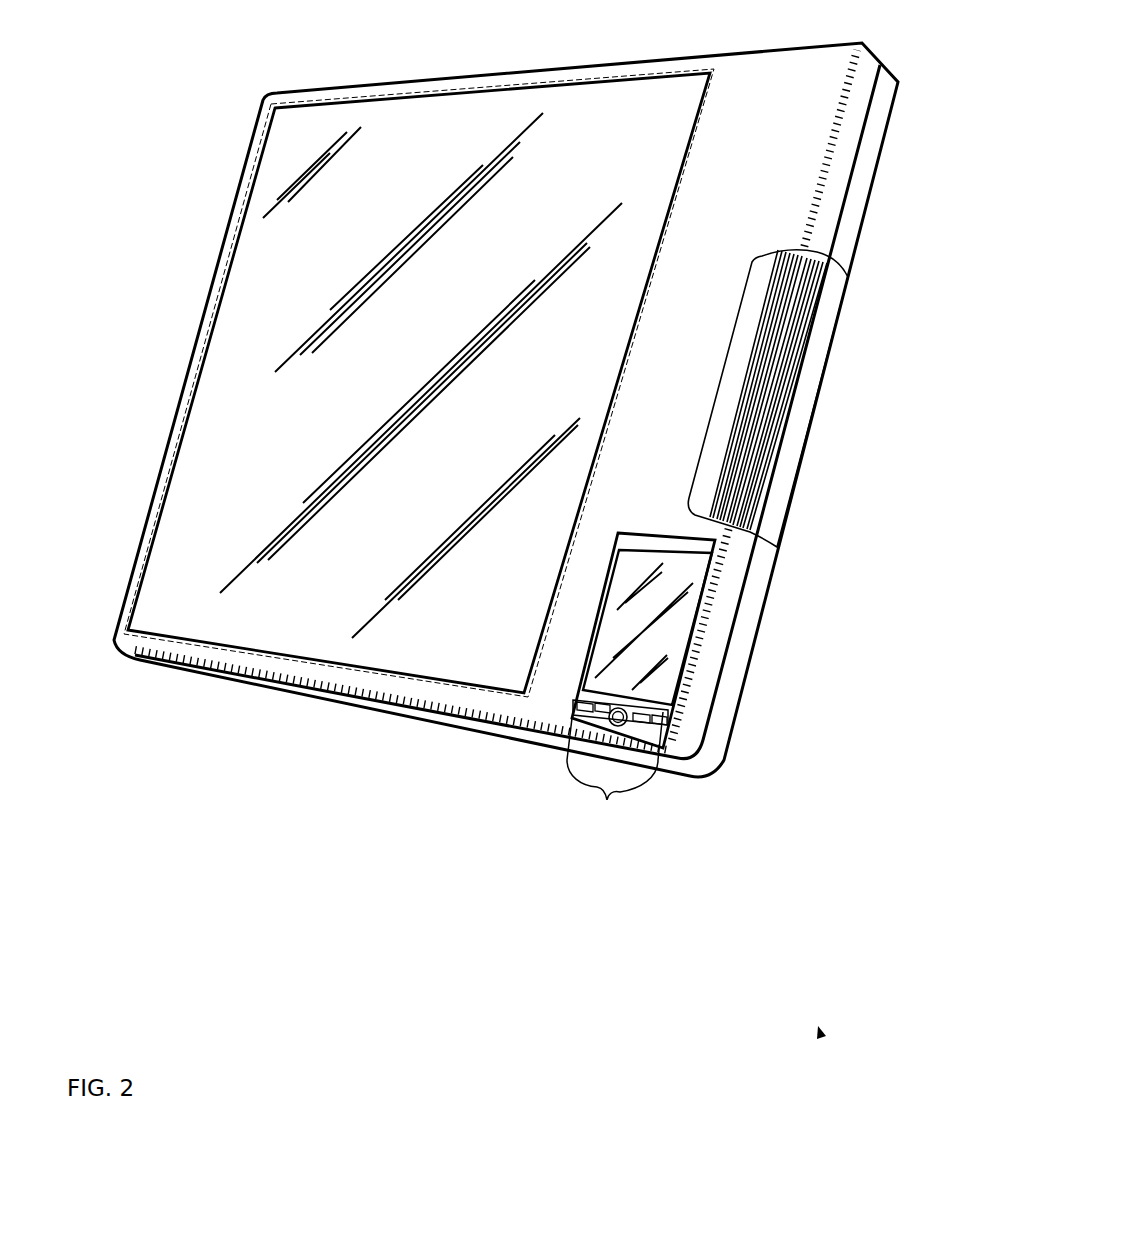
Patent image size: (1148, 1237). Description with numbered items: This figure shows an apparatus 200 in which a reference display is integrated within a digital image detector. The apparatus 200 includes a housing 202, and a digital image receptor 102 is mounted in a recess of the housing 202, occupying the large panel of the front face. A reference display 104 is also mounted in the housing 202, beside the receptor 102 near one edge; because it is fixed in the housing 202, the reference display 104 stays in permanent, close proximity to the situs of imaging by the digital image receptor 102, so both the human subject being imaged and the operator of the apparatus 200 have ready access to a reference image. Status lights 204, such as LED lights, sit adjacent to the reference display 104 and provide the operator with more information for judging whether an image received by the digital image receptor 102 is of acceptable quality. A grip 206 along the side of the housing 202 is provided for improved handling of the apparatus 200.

The apparatus 200 is at (821, 1035).
The housing 202 is at (523, 391).
The digital image receptor 102 is at (402, 127).
The reference display 104 is at (663, 635).
The status lights 204 is at (607, 800).
The grip 206 is at (735, 380).